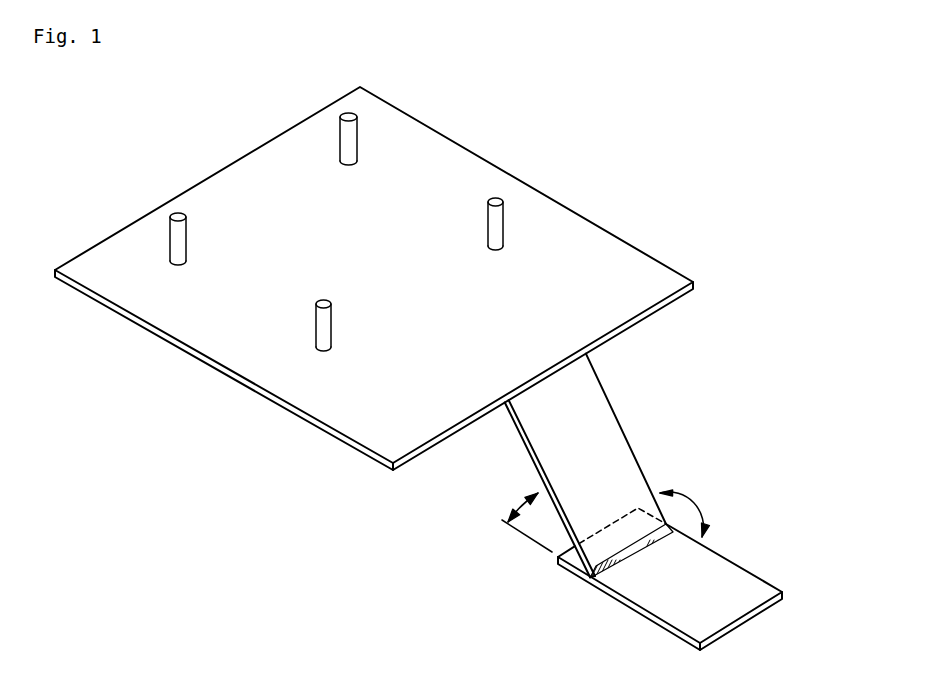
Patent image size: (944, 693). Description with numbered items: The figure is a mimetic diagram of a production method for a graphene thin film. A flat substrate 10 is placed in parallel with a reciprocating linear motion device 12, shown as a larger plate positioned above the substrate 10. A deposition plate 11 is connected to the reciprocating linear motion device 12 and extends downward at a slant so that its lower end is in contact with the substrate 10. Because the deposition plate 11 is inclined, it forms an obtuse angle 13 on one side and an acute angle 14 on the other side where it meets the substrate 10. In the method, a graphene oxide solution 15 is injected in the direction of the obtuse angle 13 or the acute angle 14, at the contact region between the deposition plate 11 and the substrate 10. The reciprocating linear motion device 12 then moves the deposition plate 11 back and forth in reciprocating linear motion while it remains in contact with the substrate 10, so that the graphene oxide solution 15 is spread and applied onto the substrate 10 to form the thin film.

The substrate 10 is at (737, 558).
The deposition plate 11 is at (622, 418).
The reciprocating linear motion device 12 is at (552, 197).
The obtuse angle between substrate and deposition plate 13 is at (688, 511).
The acute angle between substrate and deposition plate 14 is at (525, 519).
The graphene oxide solution 15 is at (620, 580).